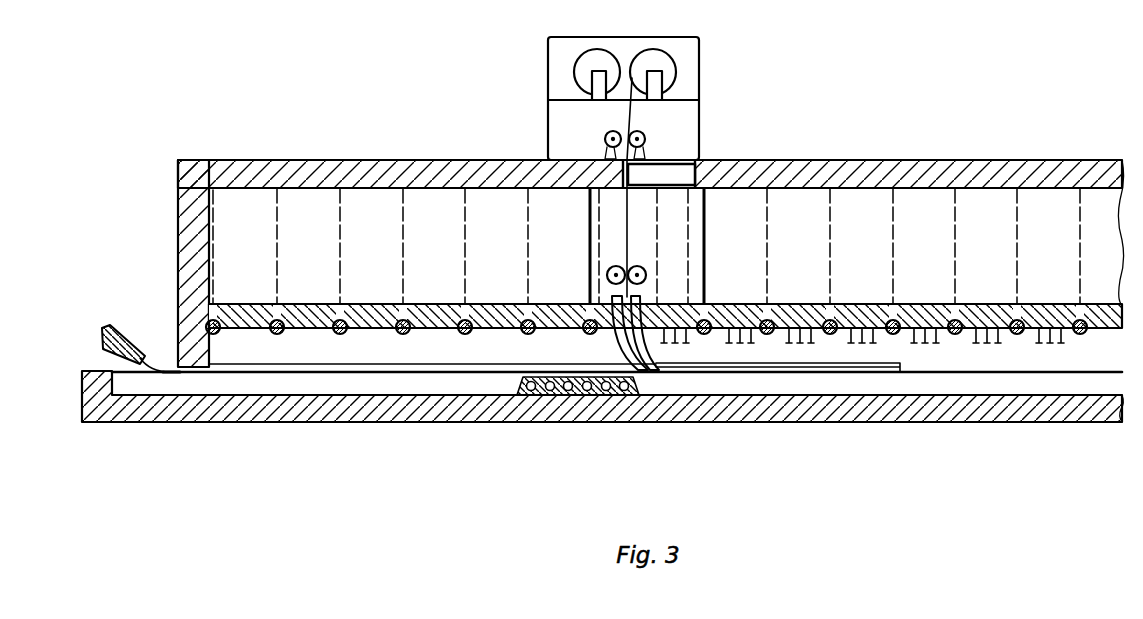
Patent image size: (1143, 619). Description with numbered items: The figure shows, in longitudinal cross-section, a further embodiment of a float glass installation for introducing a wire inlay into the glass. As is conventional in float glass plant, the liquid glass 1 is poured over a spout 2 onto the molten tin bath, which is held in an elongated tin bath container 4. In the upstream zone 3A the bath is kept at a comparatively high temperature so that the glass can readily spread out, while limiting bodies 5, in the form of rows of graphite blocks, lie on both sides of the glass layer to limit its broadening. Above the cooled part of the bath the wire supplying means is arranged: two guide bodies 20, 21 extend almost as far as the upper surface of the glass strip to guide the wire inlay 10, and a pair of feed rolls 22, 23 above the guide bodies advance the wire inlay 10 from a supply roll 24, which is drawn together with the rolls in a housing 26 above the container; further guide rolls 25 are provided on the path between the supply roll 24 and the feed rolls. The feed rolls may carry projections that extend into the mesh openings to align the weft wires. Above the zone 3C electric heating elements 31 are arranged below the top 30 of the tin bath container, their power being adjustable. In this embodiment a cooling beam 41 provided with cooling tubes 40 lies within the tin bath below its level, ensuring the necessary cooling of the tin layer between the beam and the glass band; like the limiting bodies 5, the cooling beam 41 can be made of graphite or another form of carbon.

The liquid glass 1 is at (156, 364).
The spout 2 is at (103, 341).
The upstream zone of the tin bath 3A is at (347, 378).
The zone of the tin bath 3C is at (837, 378).
The tin bath container 4 is at (187, 412).
The limiting bodies 5 is at (463, 370).
The wire inlay 10 is at (629, 233).
The guide body 20 is at (627, 352).
The guide body 21 is at (653, 354).
The feed roll 22 is at (607, 275).
The feed roll 23 is at (647, 276).
The supply roll 24 is at (657, 56).
The guide rolls 25 is at (645, 139).
The supply housing 26 is at (700, 58).
The top of the tin bath container 30 is at (796, 305).
The electric heating elements 31 is at (742, 338).
The cooling tubes 40 is at (607, 392).
The cooling beam 41 is at (549, 394).